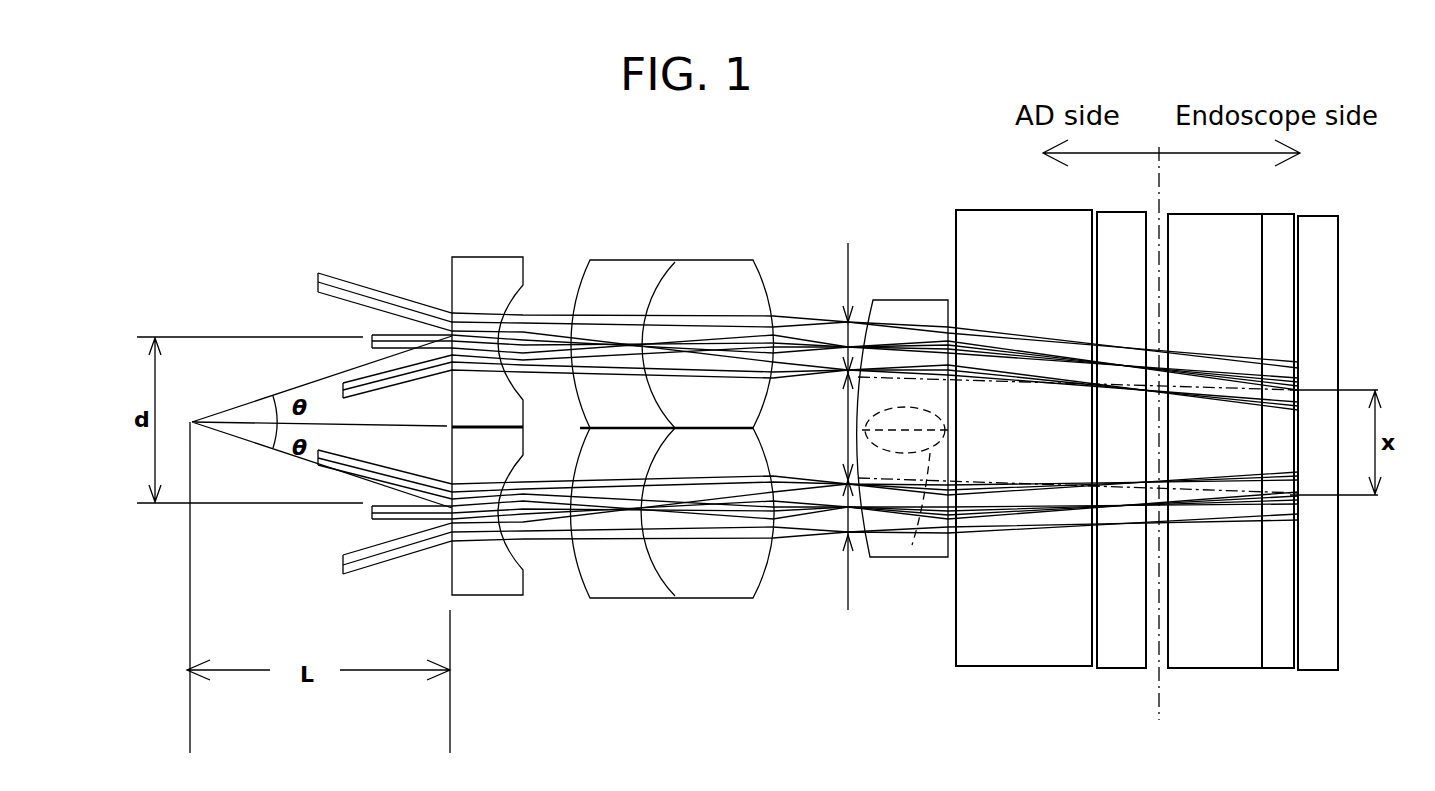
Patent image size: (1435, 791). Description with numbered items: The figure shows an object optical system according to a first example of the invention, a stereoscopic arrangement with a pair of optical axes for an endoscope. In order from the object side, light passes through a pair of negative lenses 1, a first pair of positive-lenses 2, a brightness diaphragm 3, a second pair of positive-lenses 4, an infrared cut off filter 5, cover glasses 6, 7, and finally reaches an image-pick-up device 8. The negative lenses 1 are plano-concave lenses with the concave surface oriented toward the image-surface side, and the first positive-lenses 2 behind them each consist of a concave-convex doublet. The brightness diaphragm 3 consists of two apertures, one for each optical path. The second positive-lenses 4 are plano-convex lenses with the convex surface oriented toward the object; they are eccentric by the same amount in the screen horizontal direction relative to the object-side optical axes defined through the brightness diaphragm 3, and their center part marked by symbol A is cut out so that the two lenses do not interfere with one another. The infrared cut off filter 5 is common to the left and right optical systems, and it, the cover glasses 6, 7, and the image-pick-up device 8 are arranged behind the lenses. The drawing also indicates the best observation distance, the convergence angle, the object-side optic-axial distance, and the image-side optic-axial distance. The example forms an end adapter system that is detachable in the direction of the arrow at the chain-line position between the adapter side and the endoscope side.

The pair of negative lenses 1 is at (494, 268).
The first pair of positive-lenses 2 is at (689, 273).
The brightness diaphragm 3 is at (846, 258).
The second pair of positive-lenses 4 is at (902, 434).
The infrared cut off filter 5 is at (1029, 226).
The cover glass 6 is at (1123, 224).
The cover glass 7 is at (1214, 227).
The image-pick-up device 8 is at (1323, 228).
The center part A is at (912, 559).